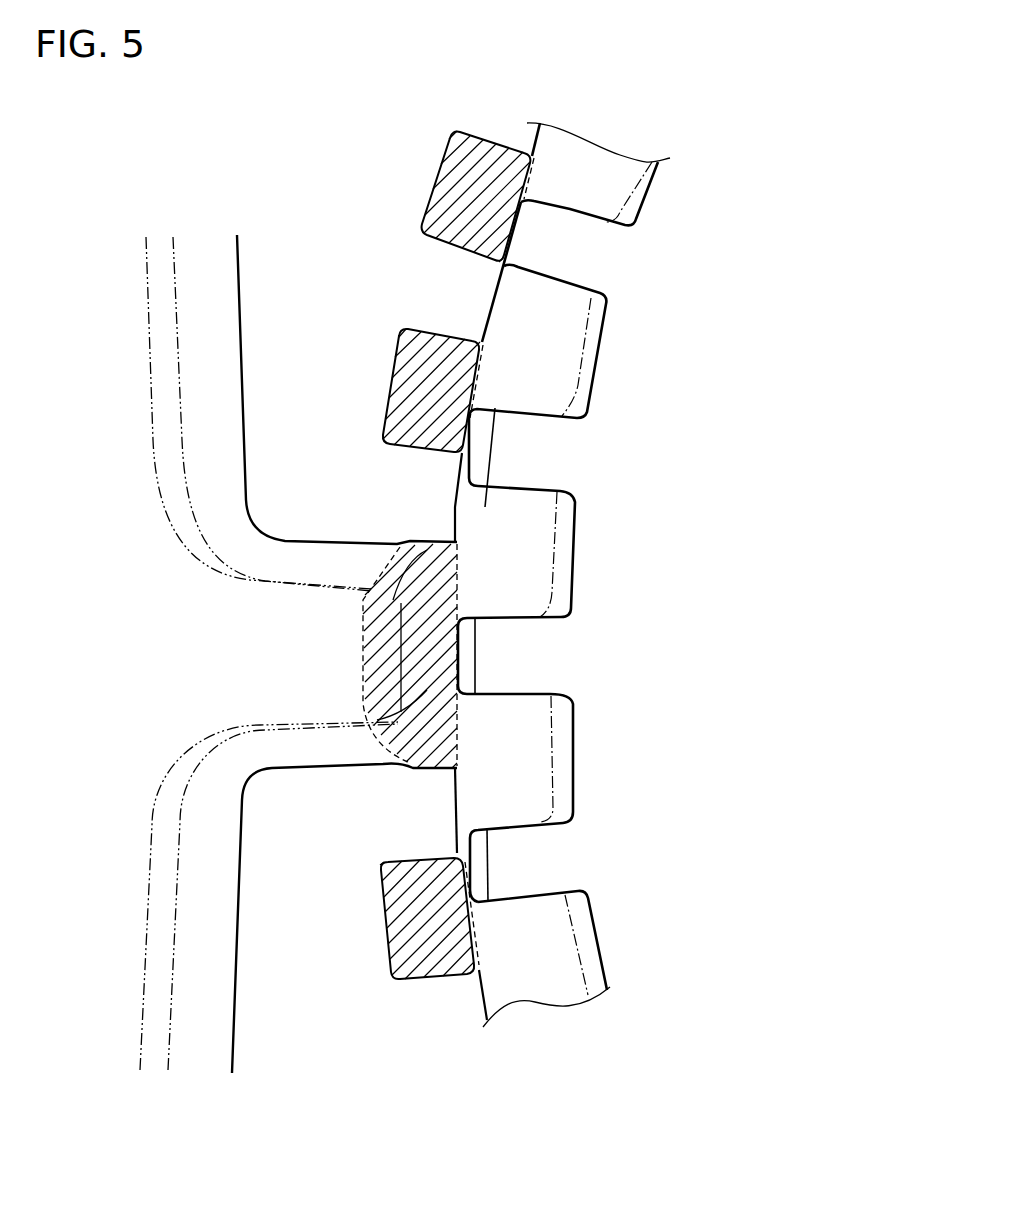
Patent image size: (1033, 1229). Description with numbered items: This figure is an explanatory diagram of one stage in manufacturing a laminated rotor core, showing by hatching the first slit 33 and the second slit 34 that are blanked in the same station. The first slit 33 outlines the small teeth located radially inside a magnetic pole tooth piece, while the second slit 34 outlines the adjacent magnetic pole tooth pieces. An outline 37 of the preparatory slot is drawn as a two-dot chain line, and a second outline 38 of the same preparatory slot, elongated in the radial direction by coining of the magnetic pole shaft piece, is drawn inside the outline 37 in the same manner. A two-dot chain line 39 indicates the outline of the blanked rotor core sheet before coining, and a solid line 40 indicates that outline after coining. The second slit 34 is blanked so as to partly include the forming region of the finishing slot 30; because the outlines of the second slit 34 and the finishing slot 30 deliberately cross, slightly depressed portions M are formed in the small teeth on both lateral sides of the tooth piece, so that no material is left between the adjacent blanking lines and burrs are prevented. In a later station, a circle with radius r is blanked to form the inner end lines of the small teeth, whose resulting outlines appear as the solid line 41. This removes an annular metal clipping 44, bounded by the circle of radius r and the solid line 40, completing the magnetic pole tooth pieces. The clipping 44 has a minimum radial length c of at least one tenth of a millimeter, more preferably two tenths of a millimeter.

The finishing slot 30 is at (237, 293).
The first slit 33 is at (500, 200).
The second slit 34 is at (443, 650).
The outline of the preparatory slot 37 is at (152, 437).
The outline of the preparatory slot elongated in the radial direction 38 is at (177, 380).
The two-dot chain line 39 is at (557, 562).
The solid line 40 is at (578, 590).
The solid line 41 is at (490, 310).
The metal clipping 44 is at (557, 972).
The depressed portions M is at (372, 612).
The minimum radial length c is at (518, 511).
The radius r is at (458, 808).